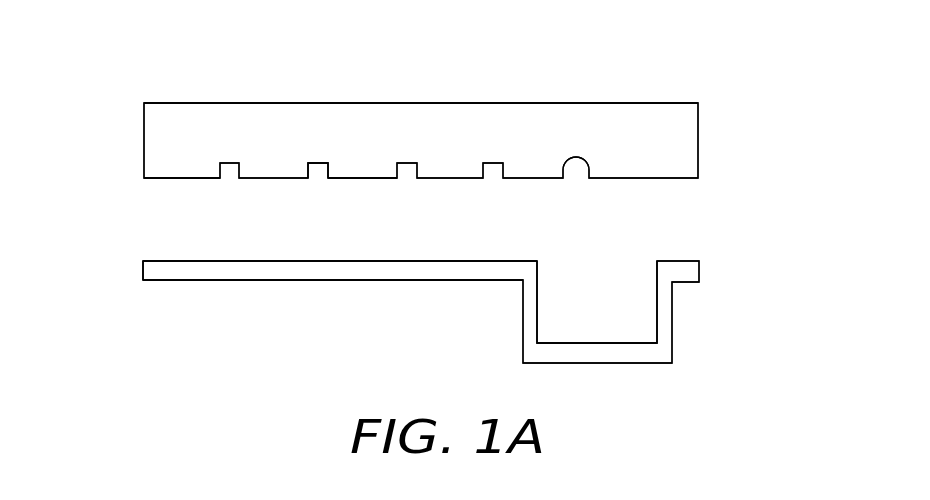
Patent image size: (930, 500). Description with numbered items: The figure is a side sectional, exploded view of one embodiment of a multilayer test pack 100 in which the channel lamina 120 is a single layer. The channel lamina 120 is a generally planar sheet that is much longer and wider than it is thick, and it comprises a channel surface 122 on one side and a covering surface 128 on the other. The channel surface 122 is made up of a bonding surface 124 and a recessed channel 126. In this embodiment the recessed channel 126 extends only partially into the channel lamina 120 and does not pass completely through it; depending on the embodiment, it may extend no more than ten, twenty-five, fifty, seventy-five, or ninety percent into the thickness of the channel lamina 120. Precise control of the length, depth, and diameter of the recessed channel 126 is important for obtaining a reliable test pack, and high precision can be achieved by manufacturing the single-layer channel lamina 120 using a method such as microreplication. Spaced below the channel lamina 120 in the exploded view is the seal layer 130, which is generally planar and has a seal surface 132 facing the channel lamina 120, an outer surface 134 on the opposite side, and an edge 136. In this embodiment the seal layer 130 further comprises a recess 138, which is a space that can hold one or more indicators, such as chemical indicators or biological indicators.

The multilayer test pack 100 is at (657, 45).
The channel lamina 120 is at (153, 72).
The covering surface 128 is at (450, 100).
The channel surface 122 is at (170, 178).
The bonding surface 124 is at (368, 177).
The recessed channel 126 is at (318, 178).
The seal layer 130 is at (322, 303).
The seal surface 132 is at (443, 260).
The outer surface 134 is at (400, 282).
The edge 136 is at (142, 272).
The recess 138 is at (582, 295).